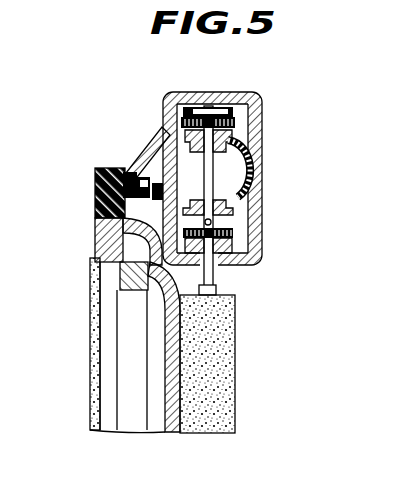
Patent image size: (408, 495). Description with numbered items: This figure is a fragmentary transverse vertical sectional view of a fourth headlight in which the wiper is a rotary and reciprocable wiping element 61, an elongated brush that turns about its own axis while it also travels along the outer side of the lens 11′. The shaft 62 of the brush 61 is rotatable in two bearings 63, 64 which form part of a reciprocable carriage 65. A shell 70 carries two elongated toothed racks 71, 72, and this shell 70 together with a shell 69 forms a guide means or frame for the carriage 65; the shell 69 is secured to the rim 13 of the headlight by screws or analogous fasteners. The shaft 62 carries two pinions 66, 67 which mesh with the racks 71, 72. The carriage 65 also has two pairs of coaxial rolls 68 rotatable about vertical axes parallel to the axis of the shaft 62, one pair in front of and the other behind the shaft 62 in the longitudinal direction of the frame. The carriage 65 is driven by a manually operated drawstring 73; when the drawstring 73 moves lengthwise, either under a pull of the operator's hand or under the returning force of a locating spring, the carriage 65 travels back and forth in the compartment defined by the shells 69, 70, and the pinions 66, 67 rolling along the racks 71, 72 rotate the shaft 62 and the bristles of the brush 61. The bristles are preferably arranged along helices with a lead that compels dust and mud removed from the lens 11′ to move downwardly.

The lens 11′ is at (166, 430).
The rim 13 is at (92, 258).
The wiping element 61 is at (238, 372).
The shaft 62 is at (223, 290).
The bearing 63 is at (140, 175).
The bearing 64 is at (156, 140).
The carriage 65 is at (262, 200).
The pinion 66 is at (262, 247).
The pinion 67 is at (258, 145).
The rolls 68 is at (222, 93).
The shell 69 is at (172, 97).
The shell 70 is at (196, 93).
The toothed rack 71 is at (262, 230).
The toothed rack 72 is at (264, 110).
The drawstring 73 is at (256, 176).